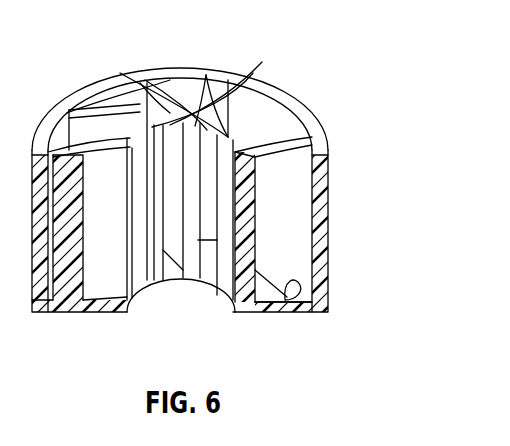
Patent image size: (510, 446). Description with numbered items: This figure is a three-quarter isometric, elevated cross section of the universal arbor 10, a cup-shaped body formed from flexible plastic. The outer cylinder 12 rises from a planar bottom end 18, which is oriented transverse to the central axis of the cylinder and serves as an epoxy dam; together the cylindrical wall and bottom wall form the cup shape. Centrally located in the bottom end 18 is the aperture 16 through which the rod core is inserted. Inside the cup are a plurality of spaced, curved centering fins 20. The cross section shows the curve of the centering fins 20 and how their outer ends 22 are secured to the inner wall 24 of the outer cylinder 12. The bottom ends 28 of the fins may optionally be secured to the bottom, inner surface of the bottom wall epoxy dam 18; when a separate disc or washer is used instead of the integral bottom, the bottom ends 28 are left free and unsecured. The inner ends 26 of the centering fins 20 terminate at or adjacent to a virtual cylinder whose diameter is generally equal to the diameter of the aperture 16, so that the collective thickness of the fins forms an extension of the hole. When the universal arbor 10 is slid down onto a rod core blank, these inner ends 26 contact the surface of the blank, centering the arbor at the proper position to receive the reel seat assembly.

The universal arbor 10 is at (276, 66).
The cylinder 12 is at (275, 89).
The aperture 16 is at (234, 316).
The bottom end 18 is at (259, 308).
The centering fins 20 is at (160, 92).
The outer ends of the centering fins 22 is at (237, 80).
The inner wall of the cylinder 24 is at (284, 133).
The inner ends of the centering fins 26 is at (206, 73).
The bottom ends of the fins 28 is at (292, 292).